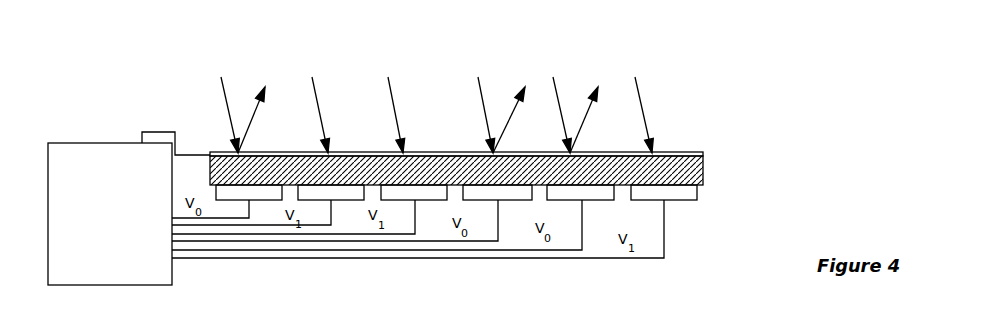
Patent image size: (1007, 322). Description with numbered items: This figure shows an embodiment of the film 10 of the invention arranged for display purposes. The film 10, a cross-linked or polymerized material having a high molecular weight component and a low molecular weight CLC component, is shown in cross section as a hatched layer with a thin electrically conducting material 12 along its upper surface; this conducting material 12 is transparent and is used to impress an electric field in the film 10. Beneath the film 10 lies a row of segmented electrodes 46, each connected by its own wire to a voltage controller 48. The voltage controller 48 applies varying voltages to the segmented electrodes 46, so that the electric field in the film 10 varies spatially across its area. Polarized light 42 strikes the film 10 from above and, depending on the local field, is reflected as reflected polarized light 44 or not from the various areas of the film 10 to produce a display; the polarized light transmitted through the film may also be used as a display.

The film 10 is at (705, 176).
The electrically conducting material 12 is at (705, 156).
The light 42 is at (222, 95).
The reflected polarized light 44 is at (590, 108).
The segmented electrodes 46 is at (695, 235).
The voltage controller 48 is at (110, 214).